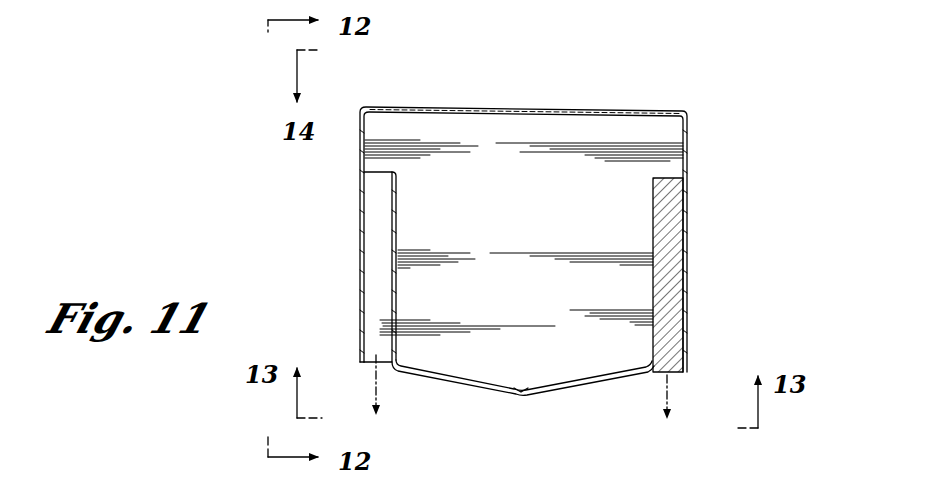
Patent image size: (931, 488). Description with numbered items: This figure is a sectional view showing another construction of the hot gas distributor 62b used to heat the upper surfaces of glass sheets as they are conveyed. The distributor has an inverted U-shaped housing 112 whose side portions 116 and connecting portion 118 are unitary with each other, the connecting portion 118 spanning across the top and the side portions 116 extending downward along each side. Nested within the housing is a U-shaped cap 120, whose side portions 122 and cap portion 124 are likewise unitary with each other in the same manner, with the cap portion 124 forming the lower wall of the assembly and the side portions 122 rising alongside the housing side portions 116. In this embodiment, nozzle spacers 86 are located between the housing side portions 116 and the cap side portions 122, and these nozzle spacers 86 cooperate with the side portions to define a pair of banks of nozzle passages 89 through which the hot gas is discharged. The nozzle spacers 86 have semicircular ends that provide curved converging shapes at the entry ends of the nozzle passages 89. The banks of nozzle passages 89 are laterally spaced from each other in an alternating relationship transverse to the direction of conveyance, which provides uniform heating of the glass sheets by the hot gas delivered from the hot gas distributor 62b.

The inverted U-shaped housing 112 is at (438, 97).
The connecting portion 118 is at (626, 106).
The side portions 116 is at (360, 240).
The side portions 122 is at (398, 228).
The U-shaped cap 120 is at (517, 398).
The cap portion 124 is at (552, 393).
The nozzle passages 89 is at (362, 330).
The nozzle spacers 86 is at (672, 342).
The hot gas distributor 62b is at (738, 283).